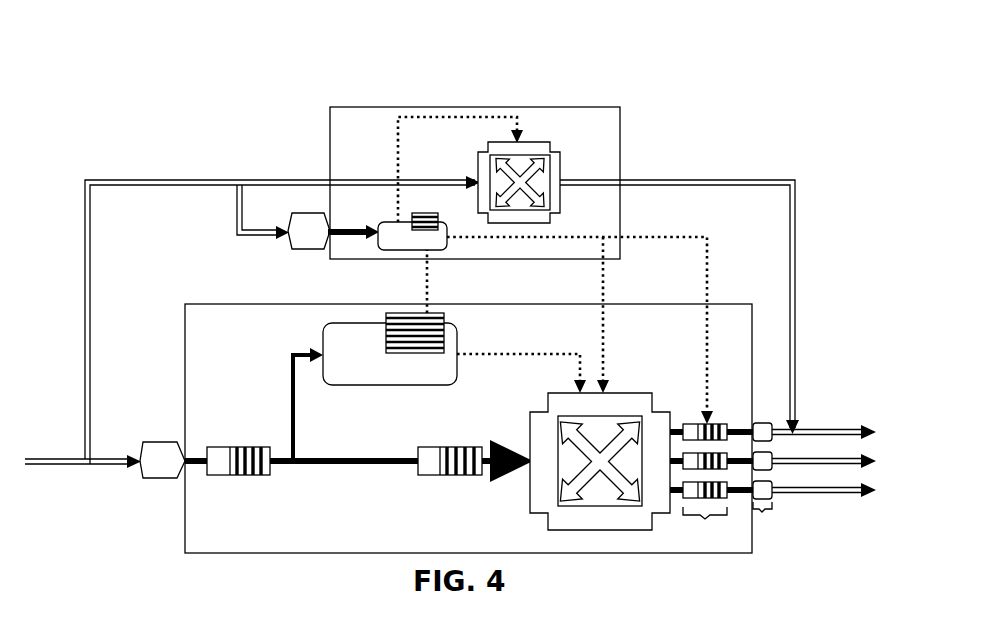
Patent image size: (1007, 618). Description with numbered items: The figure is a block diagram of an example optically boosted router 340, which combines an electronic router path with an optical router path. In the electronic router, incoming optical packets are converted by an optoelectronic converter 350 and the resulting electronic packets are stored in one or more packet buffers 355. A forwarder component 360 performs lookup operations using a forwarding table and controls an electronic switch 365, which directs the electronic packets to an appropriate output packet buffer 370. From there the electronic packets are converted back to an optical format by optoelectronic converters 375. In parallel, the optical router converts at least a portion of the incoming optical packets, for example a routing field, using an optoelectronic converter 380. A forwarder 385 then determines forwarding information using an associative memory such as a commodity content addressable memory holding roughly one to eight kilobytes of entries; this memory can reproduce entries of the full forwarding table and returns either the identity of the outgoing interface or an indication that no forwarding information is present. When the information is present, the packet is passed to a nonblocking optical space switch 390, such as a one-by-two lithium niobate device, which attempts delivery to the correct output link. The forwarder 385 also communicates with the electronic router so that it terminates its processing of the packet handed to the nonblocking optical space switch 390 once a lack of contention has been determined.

The optically boosted router 340 is at (118, 67).
The optoelectronic converter 350 is at (166, 478).
The packet buffers 355 is at (242, 476).
The forwarder component 360 is at (372, 323).
The electronic switch 365 is at (633, 393).
The output packet buffer 370 is at (705, 518).
The optoelectronic converters 375 is at (763, 513).
The optoelectronic converter 380 is at (310, 250).
The forwarder 385 is at (395, 222).
The nonblocking optical space switch 390 is at (562, 167).